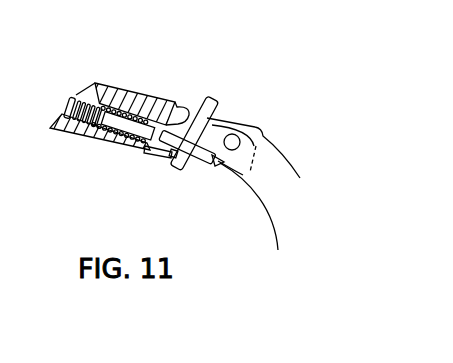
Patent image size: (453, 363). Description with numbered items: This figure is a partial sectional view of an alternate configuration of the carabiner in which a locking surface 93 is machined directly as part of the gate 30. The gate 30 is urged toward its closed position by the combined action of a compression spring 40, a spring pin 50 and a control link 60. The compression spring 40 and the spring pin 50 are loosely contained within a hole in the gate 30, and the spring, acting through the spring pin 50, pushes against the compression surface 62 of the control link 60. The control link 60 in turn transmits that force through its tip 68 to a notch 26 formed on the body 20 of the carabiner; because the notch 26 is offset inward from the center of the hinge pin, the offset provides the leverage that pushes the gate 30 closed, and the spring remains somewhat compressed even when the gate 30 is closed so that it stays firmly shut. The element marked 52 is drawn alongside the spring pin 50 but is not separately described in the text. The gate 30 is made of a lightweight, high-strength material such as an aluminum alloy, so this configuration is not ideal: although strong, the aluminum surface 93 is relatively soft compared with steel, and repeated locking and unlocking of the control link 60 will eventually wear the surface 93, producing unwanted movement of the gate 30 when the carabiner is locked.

The body 20 is at (268, 152).
The notch 26 is at (248, 190).
The gate 30 is at (88, 133).
The compression spring 40 is at (112, 108).
The spring pin 50 is at (113, 130).
The rack 52 is at (131, 141).
The control link 60 is at (160, 152).
The compression surface 62 is at (194, 110).
The tip 68 is at (214, 167).
The surface 93 is at (162, 104).